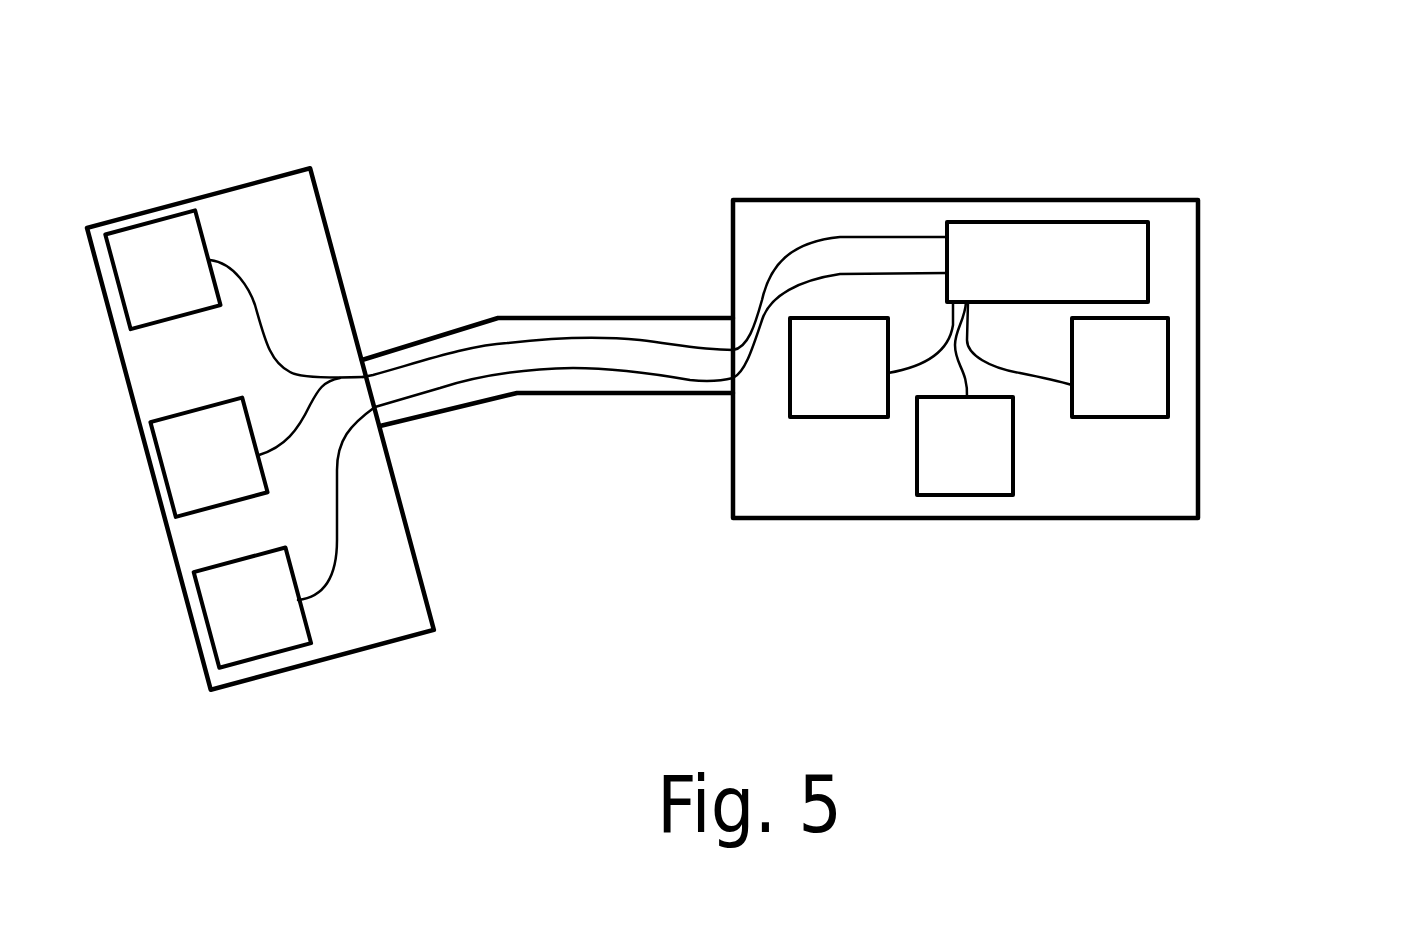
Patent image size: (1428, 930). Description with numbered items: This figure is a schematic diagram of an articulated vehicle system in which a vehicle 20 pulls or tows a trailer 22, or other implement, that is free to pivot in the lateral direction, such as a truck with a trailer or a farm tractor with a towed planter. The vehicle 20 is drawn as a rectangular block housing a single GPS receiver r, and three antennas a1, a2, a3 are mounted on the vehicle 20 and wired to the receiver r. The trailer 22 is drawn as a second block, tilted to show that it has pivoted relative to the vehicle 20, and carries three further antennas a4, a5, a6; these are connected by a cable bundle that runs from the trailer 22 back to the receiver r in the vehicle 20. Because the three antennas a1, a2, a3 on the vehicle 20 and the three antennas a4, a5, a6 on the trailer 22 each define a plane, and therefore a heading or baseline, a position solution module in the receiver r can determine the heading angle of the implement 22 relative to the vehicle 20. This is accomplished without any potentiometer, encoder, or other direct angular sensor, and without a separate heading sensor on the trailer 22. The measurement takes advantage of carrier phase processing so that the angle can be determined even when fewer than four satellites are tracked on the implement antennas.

The vehicle 20 is at (1078, 301).
The trailer 22 is at (317, 354).
The antenna a1 is at (868, 391).
The antenna a2 is at (1149, 391).
The antenna a3 is at (994, 470).
The antenna a4 is at (121, 312).
The antenna a5 is at (208, 457).
The antenna a6 is at (252, 608).
The GPS receiver r is at (1047, 262).